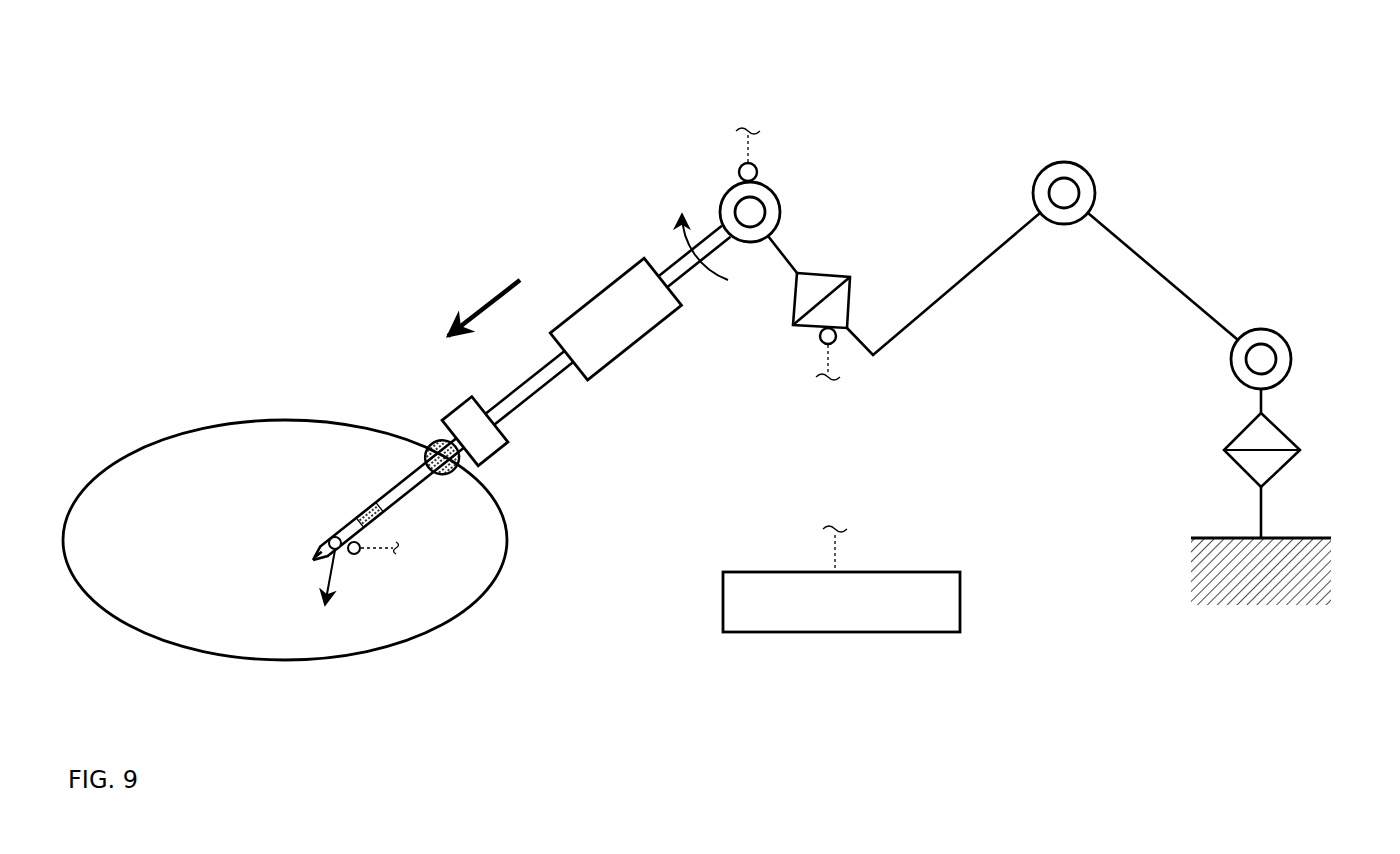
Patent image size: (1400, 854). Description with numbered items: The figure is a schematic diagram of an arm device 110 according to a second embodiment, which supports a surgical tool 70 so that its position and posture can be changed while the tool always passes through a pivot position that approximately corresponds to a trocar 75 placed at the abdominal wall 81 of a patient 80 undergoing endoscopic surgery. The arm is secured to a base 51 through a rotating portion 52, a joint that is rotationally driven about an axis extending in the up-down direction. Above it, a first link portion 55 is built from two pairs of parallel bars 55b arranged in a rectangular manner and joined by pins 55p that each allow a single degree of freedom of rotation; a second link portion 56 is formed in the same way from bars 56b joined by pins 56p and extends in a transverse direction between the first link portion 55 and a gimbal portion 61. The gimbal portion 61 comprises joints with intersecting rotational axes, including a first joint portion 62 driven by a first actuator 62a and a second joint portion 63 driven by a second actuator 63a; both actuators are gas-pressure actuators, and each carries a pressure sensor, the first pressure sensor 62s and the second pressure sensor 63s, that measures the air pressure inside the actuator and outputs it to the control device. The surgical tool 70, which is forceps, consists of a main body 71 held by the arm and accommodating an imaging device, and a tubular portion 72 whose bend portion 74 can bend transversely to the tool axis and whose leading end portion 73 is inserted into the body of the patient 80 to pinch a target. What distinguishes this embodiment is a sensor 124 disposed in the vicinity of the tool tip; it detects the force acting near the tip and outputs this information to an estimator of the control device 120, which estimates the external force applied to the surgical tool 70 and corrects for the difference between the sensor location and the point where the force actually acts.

The base 51 is at (1210, 536).
The rotating portion 52 is at (1290, 433).
The first link portion 55 is at (1201, 292).
The bars 55b is at (1140, 253).
The pins 55p is at (1228, 360).
The second link portion 56 is at (991, 225).
The bars 56b is at (950, 290).
The pins 56p is at (1060, 163).
The gimbal portion 61 is at (833, 258).
The first joint portion 62 is at (892, 320).
The first actuator 62a is at (793, 330).
The first pressure sensor 62s is at (820, 343).
The second joint portion 63 is at (741, 220).
The second actuator 63a is at (733, 185).
The second pressure sensor 63s is at (758, 165).
The surgical tool 70 is at (507, 398).
The main body 71 is at (615, 319).
The tubular portion 72 is at (530, 388).
The leading end portion 73 is at (386, 501).
The bend portion 74 is at (369, 514).
The trocar 75 is at (475, 431).
The patient 80 is at (285, 500).
The abdominal wall 81 is at (275, 420).
The arm device 110 is at (1187, 126).
The control device 120 is at (962, 600).
The sensor 124 is at (358, 555).